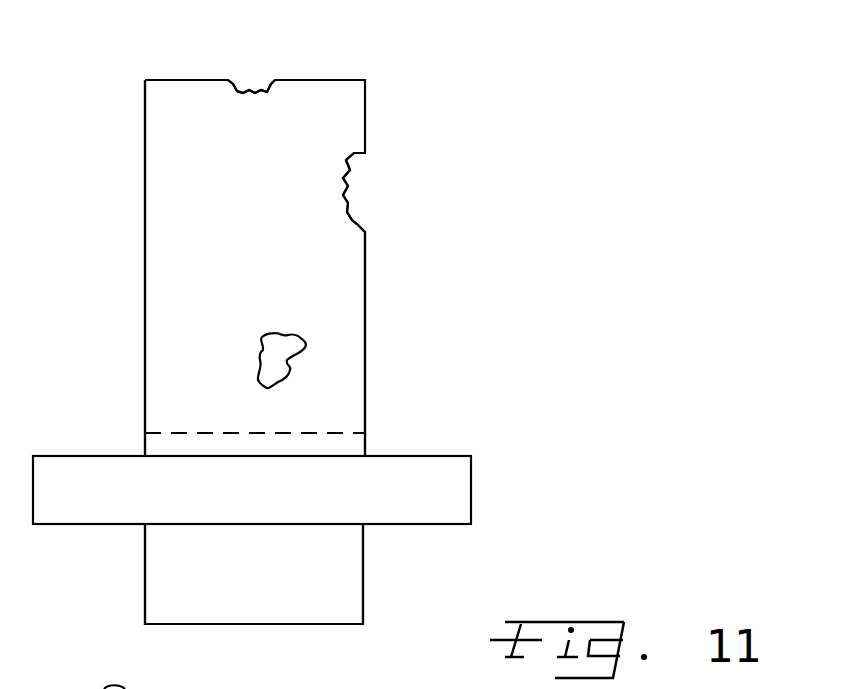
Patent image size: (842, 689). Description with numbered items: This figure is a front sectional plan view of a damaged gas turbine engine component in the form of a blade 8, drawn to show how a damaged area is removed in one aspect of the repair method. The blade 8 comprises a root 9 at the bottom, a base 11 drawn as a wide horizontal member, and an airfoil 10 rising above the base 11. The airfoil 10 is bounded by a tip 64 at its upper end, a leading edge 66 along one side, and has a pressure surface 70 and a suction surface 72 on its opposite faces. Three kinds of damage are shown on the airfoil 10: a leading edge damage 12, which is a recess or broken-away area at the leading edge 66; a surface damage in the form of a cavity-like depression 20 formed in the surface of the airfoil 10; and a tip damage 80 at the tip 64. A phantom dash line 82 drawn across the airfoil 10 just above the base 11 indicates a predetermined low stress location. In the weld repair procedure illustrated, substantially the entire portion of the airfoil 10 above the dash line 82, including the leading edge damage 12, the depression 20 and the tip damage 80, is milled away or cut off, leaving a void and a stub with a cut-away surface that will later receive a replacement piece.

The blade 8 is at (465, 545).
The root 9 is at (363, 578).
The airfoil 10 is at (393, 74).
The base 11 is at (472, 483).
The leading edge damage site 12 is at (374, 199).
The cavity-like depression 20 is at (307, 357).
The tip 64 is at (178, 79).
The leading edge 66 is at (365, 296).
The pressure surface 70 is at (266, 257).
The suction surface 72 is at (132, 253).
The tip damage 80 is at (251, 78).
The dash line 82 is at (285, 433).